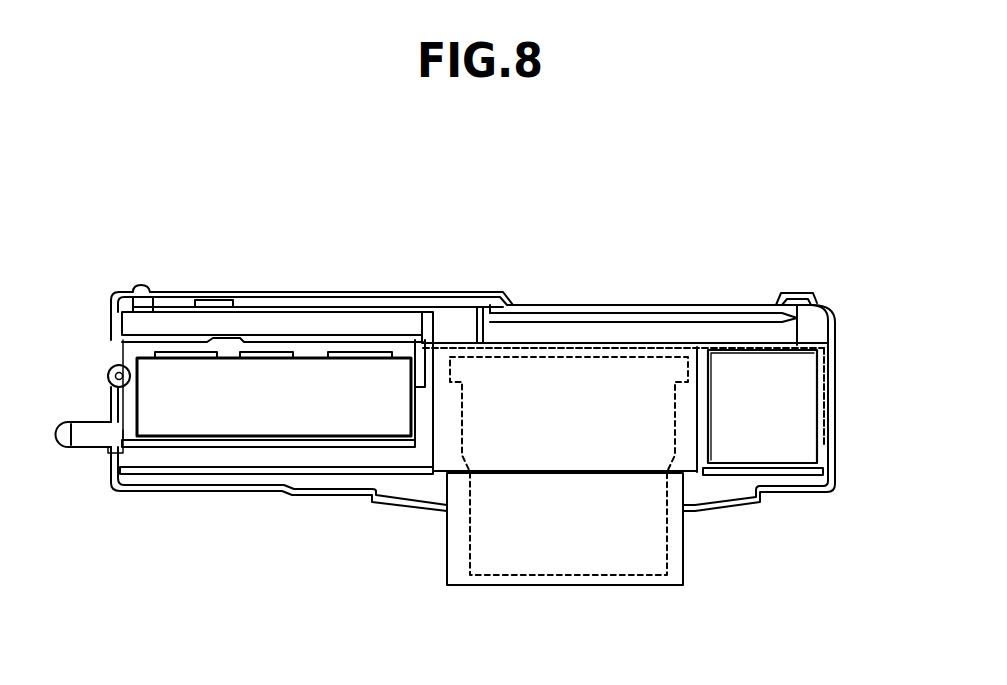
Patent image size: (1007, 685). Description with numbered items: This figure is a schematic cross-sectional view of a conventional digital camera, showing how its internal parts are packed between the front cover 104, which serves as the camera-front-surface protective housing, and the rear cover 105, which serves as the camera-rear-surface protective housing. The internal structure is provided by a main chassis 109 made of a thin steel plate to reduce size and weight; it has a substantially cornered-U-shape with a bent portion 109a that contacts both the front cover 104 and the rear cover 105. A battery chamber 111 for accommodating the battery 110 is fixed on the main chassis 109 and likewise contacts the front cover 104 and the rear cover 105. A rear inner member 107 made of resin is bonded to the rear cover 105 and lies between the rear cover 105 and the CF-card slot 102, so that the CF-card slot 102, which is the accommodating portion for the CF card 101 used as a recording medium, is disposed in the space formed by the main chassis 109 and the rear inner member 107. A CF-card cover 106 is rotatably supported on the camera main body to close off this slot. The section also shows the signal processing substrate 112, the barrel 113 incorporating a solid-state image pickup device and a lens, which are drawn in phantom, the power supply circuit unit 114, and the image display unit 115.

The CF card 101 is at (122, 325).
The CF-card slot 102 is at (448, 313).
The front cover 104 is at (790, 494).
The rear cover 105 is at (798, 292).
The CF-card cover 106 is at (150, 297).
The rear inner member 107 is at (273, 303).
The main chassis 109 is at (605, 338).
The bent portion 109a is at (830, 378).
The battery 110 is at (200, 420).
The battery chamber 111 is at (122, 432).
The signal processing substrate 112 is at (325, 470).
The barrel 113 is at (552, 572).
The power supply circuit unit 114 is at (797, 432).
The image display unit 115 is at (708, 315).